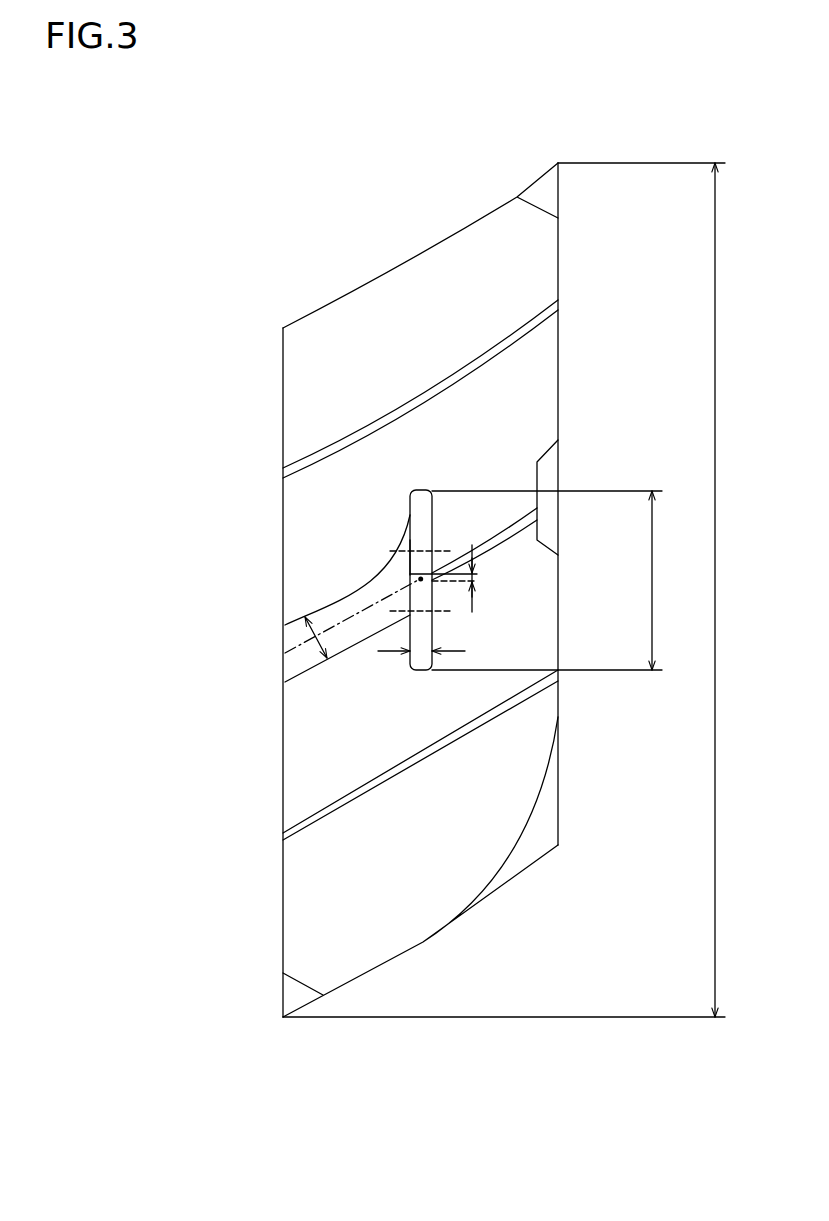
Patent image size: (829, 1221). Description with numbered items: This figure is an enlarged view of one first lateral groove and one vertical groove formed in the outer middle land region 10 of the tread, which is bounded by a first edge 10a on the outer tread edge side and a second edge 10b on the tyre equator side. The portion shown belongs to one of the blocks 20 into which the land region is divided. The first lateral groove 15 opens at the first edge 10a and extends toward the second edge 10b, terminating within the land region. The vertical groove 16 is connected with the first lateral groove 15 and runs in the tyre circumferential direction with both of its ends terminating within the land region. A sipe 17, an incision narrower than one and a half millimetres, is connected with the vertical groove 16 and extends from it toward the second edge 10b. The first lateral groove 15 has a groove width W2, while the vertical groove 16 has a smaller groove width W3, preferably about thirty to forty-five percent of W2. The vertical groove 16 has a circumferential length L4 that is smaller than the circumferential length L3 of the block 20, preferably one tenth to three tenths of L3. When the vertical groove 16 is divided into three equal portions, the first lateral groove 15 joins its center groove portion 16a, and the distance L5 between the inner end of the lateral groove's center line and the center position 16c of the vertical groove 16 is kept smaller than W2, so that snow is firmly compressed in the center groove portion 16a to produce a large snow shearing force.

The outer middle land region 10 is at (432, 590).
The block 20 is at (432, 590).
The first edge 10a is at (283, 357).
The second edge 10b is at (558, 270).
The first lateral groove 15 is at (353, 603).
The vertical groove 16 is at (420, 508).
The center groove portion 16a is at (420, 567).
The center position 16c is at (420, 579).
The sipe 17 is at (513, 533).
The groove width W2 is at (300, 628).
The groove width W3 is at (417, 670).
The length L3 is at (517, 590).
The length L4 is at (560, 580).
The distance L5 is at (475, 584).